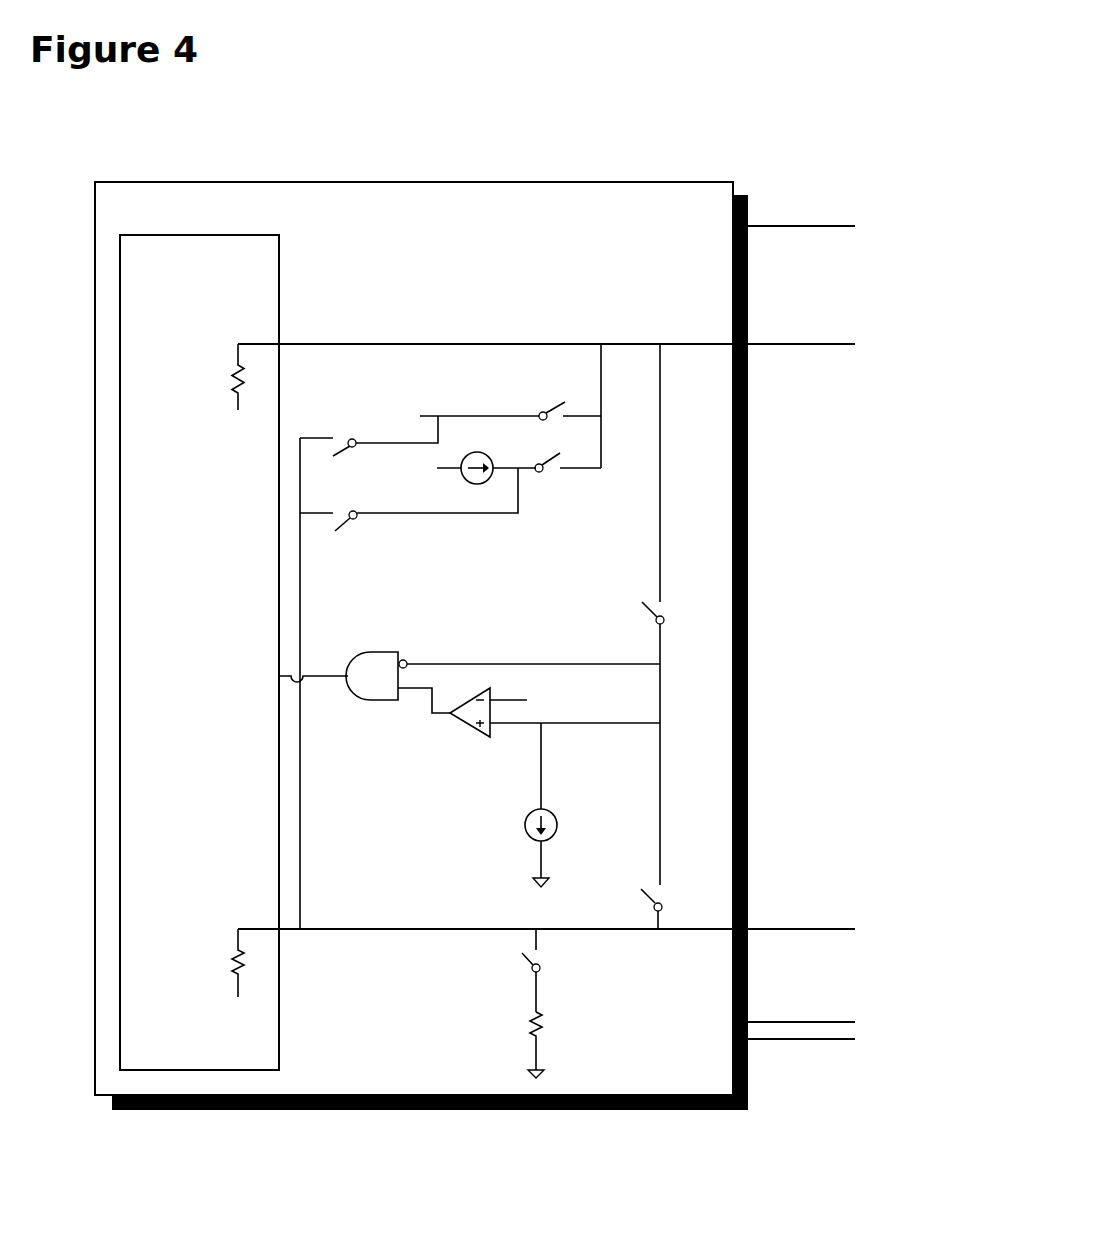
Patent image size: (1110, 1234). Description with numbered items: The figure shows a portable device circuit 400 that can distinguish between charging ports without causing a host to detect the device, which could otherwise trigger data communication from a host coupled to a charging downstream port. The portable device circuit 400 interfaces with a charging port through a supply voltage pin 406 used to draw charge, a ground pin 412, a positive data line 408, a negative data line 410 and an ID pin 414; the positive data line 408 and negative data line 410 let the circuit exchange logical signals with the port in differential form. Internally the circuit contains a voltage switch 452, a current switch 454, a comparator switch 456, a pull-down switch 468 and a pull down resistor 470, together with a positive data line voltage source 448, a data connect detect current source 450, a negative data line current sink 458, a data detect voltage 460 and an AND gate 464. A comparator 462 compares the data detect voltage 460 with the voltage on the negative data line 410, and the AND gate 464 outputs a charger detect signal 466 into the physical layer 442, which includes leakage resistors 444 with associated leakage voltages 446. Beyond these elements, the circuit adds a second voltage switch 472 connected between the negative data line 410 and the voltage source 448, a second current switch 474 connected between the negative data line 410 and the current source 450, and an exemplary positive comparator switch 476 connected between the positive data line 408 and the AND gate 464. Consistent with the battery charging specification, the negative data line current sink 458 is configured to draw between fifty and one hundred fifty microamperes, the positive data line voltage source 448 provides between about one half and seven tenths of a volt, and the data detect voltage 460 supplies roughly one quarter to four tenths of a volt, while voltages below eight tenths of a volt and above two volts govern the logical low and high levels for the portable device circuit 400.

The portable device circuit 400 is at (738, 110).
The supply voltage pin 406 is at (791, 226).
The positive data line 408 is at (791, 344).
The negative data line 410 is at (818, 929).
The ground pin 412 is at (800, 1039).
The ID pin 414 is at (800, 1022).
The physical layer 442 is at (199, 652).
The leakage resistors 444 is at (232, 378).
The leakage voltages 446 is at (238, 410).
The positive data line voltage source 448 is at (421, 416).
The data connect detect current source 450 is at (463, 473).
The voltage switch 452 is at (540, 413).
The current switch 454 is at (541, 472).
The comparator switch 456 is at (662, 905).
The negative data line current sink 458 is at (525, 826).
The data detect voltage 460 is at (527, 700).
The comparator 462 is at (470, 726).
The AND gate 464 is at (378, 700).
The charger detect signal 466 is at (325, 672).
The pull-down switch 468 is at (532, 968).
The pull down resistor 470 is at (529, 1020).
The second voltage switch 472 is at (348, 441).
The second current switch 474 is at (355, 520).
The positive comparator switch 476 is at (664, 618).